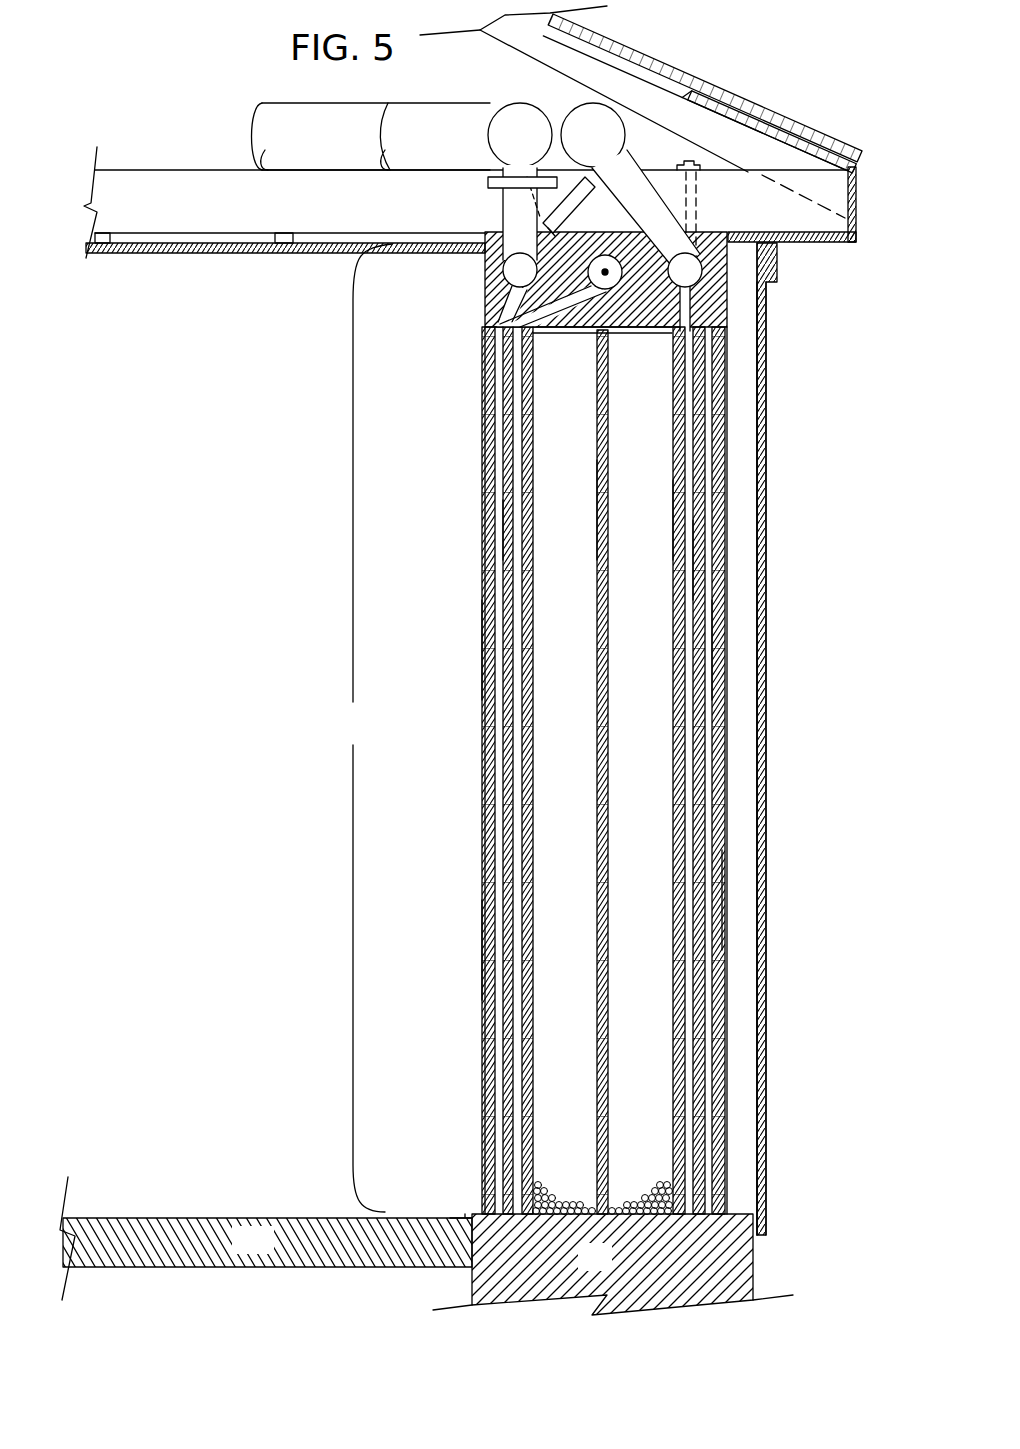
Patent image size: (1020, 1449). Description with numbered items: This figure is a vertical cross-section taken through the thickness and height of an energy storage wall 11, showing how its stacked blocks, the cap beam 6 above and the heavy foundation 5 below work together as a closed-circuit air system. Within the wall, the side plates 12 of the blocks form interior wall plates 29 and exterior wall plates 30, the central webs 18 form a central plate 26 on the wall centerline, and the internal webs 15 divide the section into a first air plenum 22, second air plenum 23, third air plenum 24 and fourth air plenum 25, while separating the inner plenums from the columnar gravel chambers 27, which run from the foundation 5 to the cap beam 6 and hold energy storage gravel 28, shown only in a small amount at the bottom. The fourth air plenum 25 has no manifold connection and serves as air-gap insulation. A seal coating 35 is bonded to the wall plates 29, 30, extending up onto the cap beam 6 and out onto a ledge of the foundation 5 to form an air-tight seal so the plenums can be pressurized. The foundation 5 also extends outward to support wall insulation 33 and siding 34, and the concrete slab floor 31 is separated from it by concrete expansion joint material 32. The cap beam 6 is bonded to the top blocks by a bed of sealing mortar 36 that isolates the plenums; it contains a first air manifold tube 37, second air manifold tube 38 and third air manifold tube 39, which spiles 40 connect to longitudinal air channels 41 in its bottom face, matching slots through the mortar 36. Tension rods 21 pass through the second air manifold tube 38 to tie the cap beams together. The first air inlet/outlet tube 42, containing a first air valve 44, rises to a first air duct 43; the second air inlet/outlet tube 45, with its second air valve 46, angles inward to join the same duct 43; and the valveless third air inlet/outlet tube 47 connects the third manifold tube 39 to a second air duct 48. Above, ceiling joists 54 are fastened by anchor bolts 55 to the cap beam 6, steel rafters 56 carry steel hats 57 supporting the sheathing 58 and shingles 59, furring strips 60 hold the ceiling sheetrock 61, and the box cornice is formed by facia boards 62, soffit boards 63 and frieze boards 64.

The heavy foundation 5 is at (613, 1264).
The cap beam 6 is at (640, 296).
The energy storage wall 11 is at (364, 728).
The side plates 12 is at (636, 770).
The internal webs 15 is at (637, 770).
The central webs 18 is at (597, 772).
The tension rods 21 is at (601, 272).
The first air plenum 22 is at (497, 482).
The second air plenum 23 is at (519, 520).
The third air plenum 24 is at (687, 528).
The fourth air plenum 25 is at (707, 570).
The central plate 26 is at (603, 538).
The columnar gravel chambers 27 is at (599, 645).
The energy storage gravel 28 is at (568, 1200).
The interior wall plates 29 is at (495, 642).
The exterior wall plates 30 is at (720, 663).
The concrete slab floor 31 is at (266, 1238).
The concrete expansion joint material 32 is at (458, 1216).
The wall insulation 33 is at (745, 742).
The siding 34 is at (763, 812).
The seal coating 35 is at (483, 950).
The sealing mortar 36 is at (590, 337).
The first air manifold tube 37 is at (517, 290).
The second air manifold tube 38 is at (603, 287).
The third air manifold tube 39 is at (685, 292).
The spiles 40 is at (636, 260).
The longitudinal air channels 41 is at (520, 363).
The first air inlet/outlet tube 42 is at (521, 212).
The first air duct 43 is at (490, 135).
The first air valve 44 is at (488, 183).
The second air inlet/outlet tube 45 is at (569, 205).
The second air valve 46 is at (549, 208).
The third air inlet/outlet tube 47 is at (646, 207).
The second air duct 48 is at (439, 136).
The ceiling joists 54 is at (177, 192).
The anchor bolts 55 is at (697, 190).
The steel rafters 56 is at (546, 43).
The steel hats 57 is at (692, 96).
The sheathing 58 is at (630, 42).
The shingles 59 is at (698, 70).
The furring strips 60 is at (272, 255).
The ceiling sheetrock 61 is at (283, 252).
The facia boards 62 is at (855, 195).
The soffit boards 63 is at (795, 232).
The frieze boards 64 is at (777, 258).